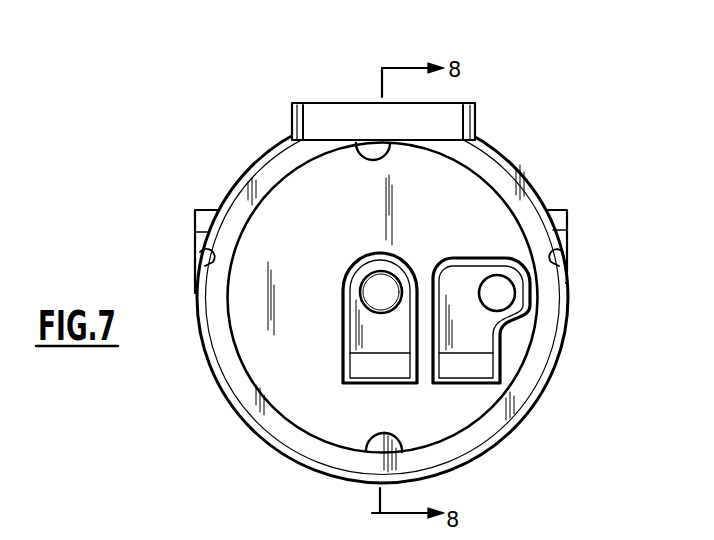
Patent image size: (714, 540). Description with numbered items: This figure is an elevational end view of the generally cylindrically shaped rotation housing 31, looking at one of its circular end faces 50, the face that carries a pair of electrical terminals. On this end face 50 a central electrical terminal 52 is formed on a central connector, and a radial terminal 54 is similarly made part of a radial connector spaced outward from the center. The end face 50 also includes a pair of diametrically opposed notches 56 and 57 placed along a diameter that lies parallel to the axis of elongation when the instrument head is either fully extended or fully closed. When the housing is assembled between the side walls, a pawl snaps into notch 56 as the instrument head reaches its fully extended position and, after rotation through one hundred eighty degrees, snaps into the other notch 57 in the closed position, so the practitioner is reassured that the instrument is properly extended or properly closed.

The circular end face 50 is at (495, 197).
The rotation housing 31 is at (316, 232).
The notch 57 is at (372, 148).
The central electrical terminal 52 is at (376, 290).
The radial terminal 54 is at (505, 293).
The notch 56 is at (375, 432).